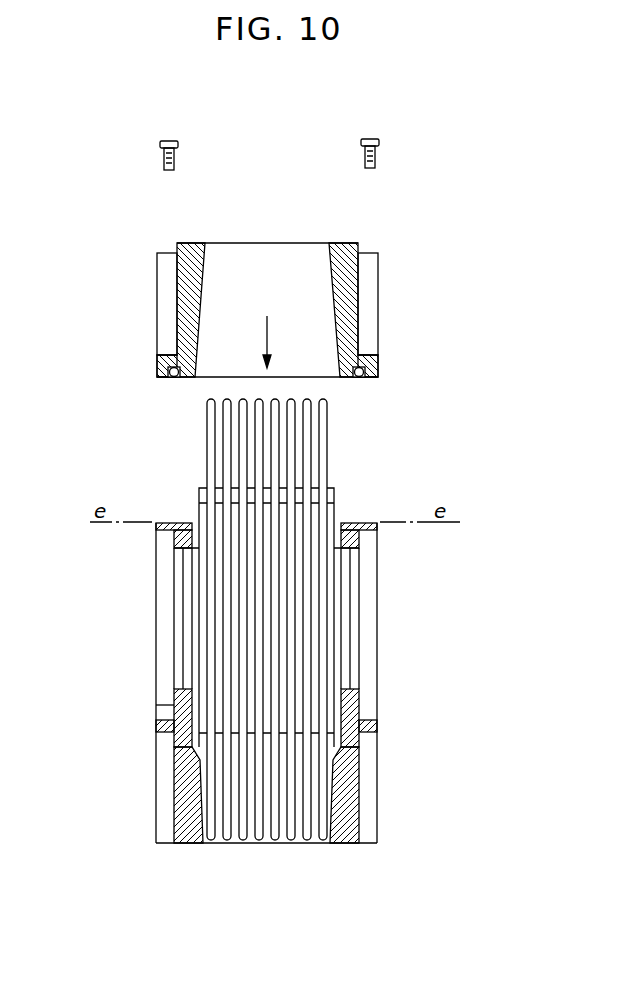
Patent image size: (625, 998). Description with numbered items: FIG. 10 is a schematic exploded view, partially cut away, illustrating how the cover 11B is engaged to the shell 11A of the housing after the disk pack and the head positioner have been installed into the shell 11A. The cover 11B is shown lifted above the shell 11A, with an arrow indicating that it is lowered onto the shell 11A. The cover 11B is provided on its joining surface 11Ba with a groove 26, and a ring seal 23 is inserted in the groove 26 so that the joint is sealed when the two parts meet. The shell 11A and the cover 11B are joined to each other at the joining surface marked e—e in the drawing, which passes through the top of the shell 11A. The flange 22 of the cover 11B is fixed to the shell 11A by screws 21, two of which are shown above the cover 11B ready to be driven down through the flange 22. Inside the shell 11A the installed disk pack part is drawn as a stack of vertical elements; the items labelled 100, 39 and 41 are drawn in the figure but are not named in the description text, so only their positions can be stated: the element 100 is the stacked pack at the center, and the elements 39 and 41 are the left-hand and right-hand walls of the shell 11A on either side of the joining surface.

The screws 21 is at (160, 143).
The cover 11B is at (266, 322).
The joining surface 11Ba is at (158, 378).
The flange 22 is at (378, 362).
The ring seal 23 is at (174, 380).
The groove 26 is at (380, 376).
The heat exchanger tube bundle 100 is at (330, 445).
The outer shell wall 39 is at (156, 584).
The outer shell wall 41 is at (378, 600).
The shell 11A is at (280, 665).